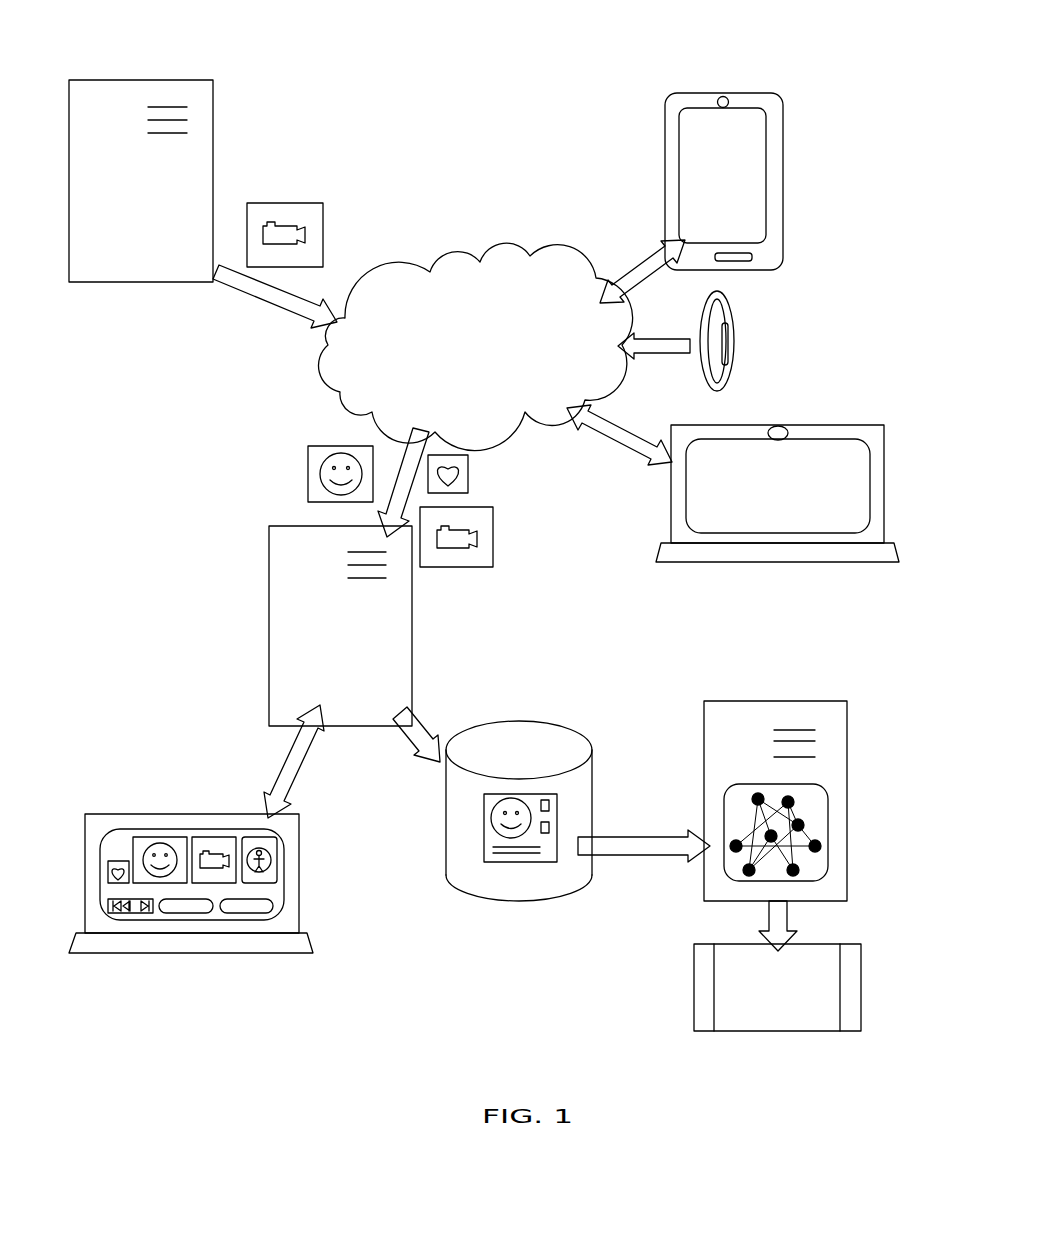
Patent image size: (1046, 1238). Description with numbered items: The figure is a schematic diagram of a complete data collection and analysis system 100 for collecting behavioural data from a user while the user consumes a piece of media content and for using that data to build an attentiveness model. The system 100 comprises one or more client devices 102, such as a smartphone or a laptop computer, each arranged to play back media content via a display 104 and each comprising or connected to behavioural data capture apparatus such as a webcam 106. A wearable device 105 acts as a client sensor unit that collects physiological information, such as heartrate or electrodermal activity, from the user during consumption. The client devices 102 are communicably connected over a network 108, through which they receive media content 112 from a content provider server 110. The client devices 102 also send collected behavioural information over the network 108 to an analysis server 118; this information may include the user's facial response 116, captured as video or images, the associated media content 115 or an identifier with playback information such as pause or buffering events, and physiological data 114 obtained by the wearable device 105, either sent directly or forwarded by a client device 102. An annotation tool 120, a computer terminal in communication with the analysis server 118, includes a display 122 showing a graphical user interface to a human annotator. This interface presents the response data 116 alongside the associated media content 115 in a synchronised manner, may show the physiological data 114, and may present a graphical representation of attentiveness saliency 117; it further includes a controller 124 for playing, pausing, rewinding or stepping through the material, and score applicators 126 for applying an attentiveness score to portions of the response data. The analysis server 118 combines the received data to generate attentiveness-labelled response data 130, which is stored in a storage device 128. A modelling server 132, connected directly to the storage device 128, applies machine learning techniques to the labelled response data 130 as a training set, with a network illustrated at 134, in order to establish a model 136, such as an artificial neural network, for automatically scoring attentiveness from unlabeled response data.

The data collection and analysis system 100 is at (216, 1092).
The client device 102 is at (782, 139).
The display 104 is at (745, 196).
The wearable device 105 is at (728, 318).
The webcam 106 is at (719, 97).
The network 108 is at (517, 239).
The content provider server 110 is at (205, 100).
The media content 112 is at (302, 212).
The physiological data 114 is at (470, 470).
The associated media content 115 is at (491, 566).
The facial response 116 is at (306, 453).
The attentiveness saliency 117 is at (283, 858).
The analysis server 118 is at (286, 560).
The annotation tool 120 is at (108, 955).
The display 122 is at (270, 893).
The controller 124 is at (127, 913).
The score applicator 126 is at (187, 915).
The storage device 128 is at (548, 742).
The attentiveness-labelled response data 130 is at (517, 866).
The modelling server 132 is at (836, 710).
The machine learning model 134 is at (812, 803).
The model 136 is at (805, 1022).